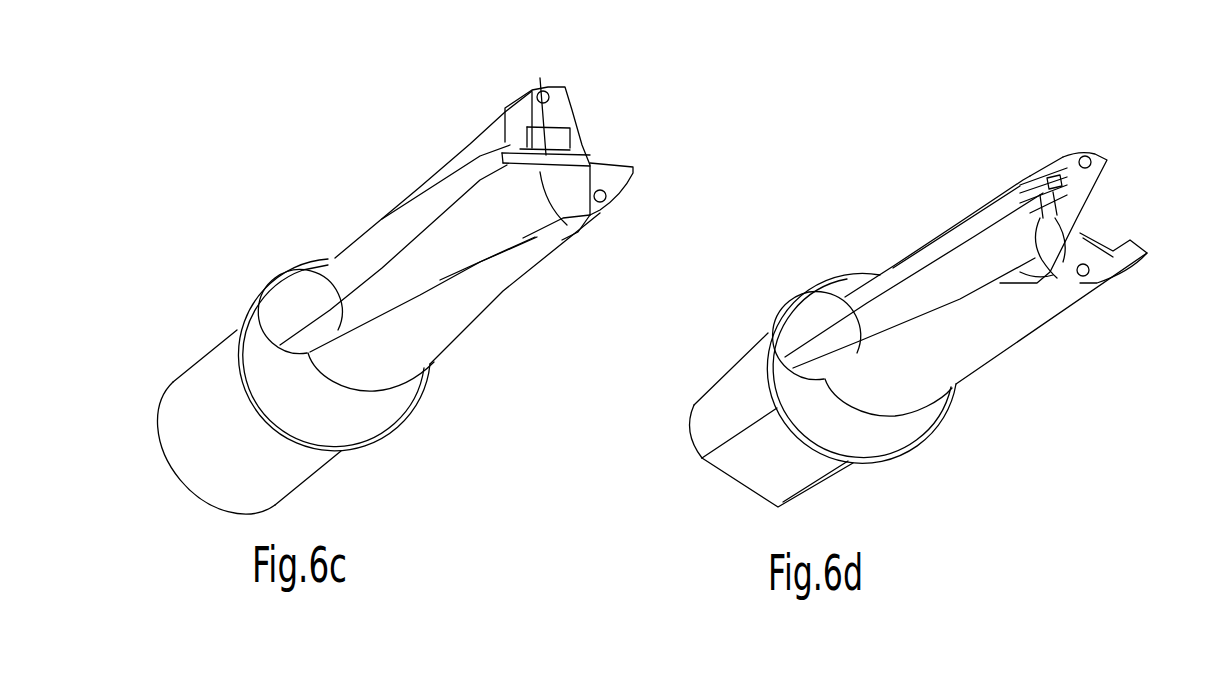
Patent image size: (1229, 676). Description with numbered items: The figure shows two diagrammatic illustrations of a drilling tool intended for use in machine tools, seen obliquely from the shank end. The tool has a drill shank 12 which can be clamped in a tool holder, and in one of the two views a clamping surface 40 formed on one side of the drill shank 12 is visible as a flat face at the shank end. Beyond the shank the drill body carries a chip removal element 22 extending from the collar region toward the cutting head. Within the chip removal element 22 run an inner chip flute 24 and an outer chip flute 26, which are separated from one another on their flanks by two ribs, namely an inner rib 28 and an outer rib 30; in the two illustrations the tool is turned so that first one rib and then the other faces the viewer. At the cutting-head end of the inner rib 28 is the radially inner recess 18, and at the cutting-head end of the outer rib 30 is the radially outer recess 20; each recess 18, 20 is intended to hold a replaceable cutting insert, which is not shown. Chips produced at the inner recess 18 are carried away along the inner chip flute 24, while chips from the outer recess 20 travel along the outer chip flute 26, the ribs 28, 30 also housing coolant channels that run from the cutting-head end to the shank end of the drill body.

In FIG. 6C, the drill shank 12 is at (197, 400).
In FIG. 6D, the drill shank 12 is at (728, 390).
In FIG. 6C, the inner recess 18 is at (578, 118).
In FIG. 6D, the inner recess 18 is at (1062, 295).
In FIG. 6D, the outer recess 20 is at (1037, 178).
In FIG. 6C, the chip removal element 22 is at (416, 182).
In FIG. 6D, the chip removal element 22 is at (931, 220).
In FIG. 6C, the inner chip flute 24 is at (381, 268).
In FIG. 6D, the outer chip flute 26 is at (899, 306).
In FIG. 6C, the inner rib 28 is at (445, 168).
In FIG. 6D, the inner rib 28 is at (1023, 318).
In FIG. 6C, the outer rib 30 is at (488, 300).
In FIG. 6D, the outer rib 30 is at (975, 220).
In FIG. 6D, the clamping surface 40 is at (758, 463).